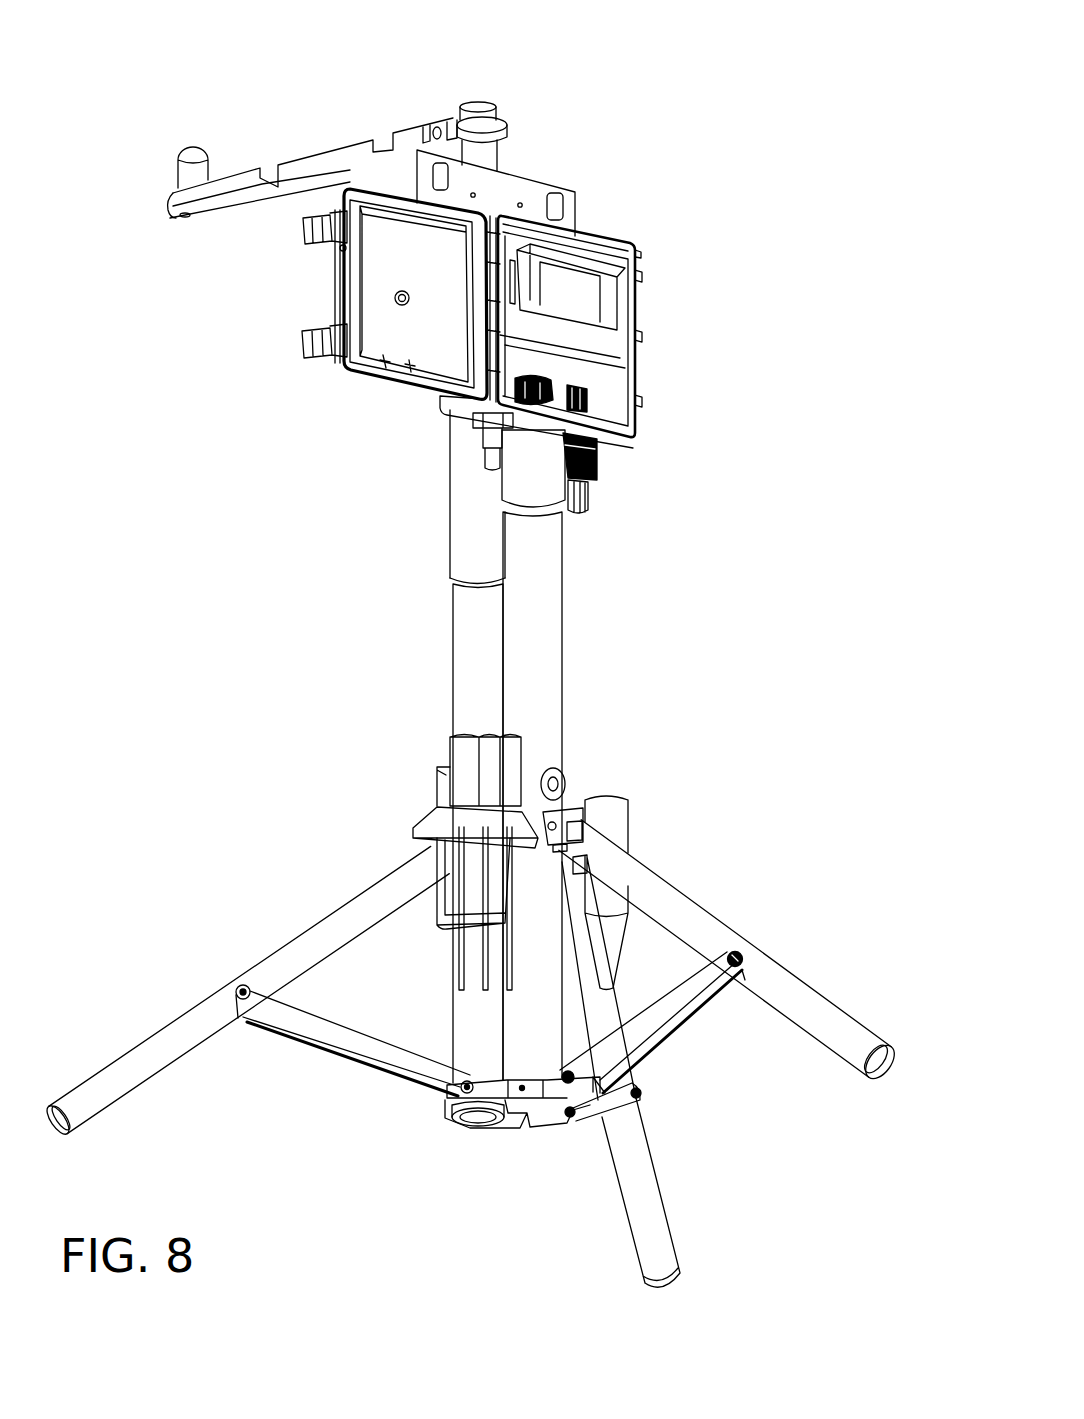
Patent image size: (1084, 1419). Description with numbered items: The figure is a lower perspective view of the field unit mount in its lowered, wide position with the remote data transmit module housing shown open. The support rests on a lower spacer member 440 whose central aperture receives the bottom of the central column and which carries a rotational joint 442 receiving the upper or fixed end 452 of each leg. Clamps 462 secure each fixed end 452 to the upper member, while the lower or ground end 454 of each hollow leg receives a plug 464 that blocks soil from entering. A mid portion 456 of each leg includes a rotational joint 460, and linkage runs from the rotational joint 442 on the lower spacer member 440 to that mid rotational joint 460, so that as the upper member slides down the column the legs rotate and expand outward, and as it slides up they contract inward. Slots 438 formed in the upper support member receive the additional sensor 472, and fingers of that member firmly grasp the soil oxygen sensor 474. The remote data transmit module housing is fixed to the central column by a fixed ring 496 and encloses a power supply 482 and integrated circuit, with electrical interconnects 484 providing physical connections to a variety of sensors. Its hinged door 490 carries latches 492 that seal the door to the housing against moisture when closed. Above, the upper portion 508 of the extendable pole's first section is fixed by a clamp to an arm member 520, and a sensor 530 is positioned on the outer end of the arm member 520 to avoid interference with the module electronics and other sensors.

The slots 438 is at (445, 837).
The lower spacer member 440 is at (550, 1112).
The rotational joint 442 is at (450, 1118).
The upper or fixed end 452 is at (575, 807).
The lower or ground end 454 is at (885, 1045).
The mid portion 456 is at (730, 928).
The rotational joint 460 is at (242, 988).
The clamps 462 is at (577, 838).
The plug 464 is at (53, 1117).
The sensor 472 is at (467, 758).
The soil oxygen sensor 474 is at (622, 807).
The power supply 482 is at (578, 282).
The electrical interconnects 484 is at (492, 437).
The hinged door 490 is at (375, 270).
The latches 492 is at (303, 347).
The fixed ring 496 is at (560, 393).
The upper portion 508 is at (482, 105).
The arm member 520 is at (313, 163).
The sensor 530 is at (190, 171).